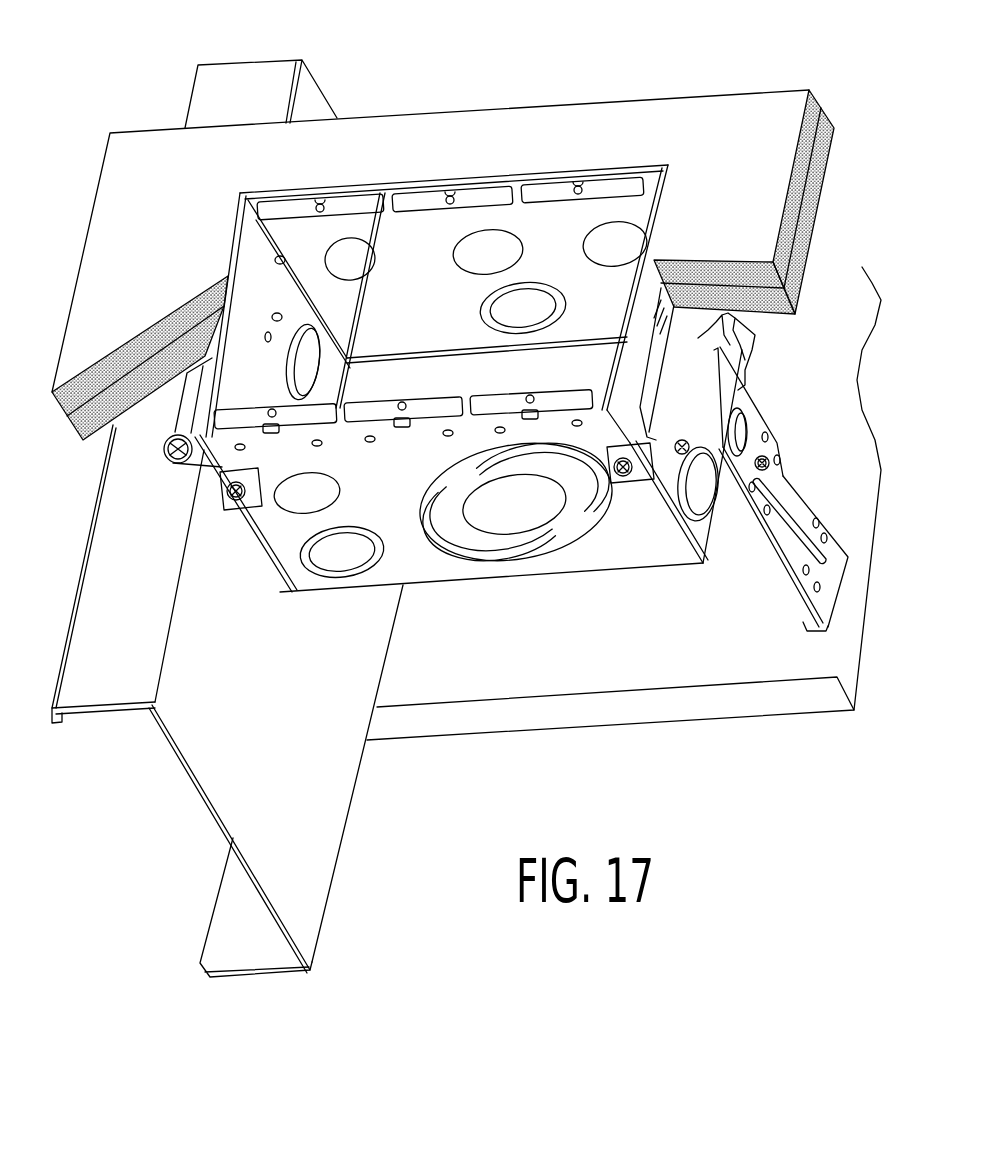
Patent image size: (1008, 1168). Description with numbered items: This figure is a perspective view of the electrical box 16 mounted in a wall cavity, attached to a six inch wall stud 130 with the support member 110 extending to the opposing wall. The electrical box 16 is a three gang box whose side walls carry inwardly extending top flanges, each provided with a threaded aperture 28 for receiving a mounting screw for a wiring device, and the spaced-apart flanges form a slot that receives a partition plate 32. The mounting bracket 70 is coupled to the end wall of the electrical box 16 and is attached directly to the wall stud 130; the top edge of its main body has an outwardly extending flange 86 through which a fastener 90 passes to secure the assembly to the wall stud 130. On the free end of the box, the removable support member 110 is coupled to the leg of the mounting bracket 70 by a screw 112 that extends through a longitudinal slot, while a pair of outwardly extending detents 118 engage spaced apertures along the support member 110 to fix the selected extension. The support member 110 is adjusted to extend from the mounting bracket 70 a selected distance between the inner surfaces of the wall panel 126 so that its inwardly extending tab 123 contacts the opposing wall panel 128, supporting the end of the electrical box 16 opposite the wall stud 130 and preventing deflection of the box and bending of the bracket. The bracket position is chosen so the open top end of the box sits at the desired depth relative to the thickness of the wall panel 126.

The electrical box 16 is at (474, 590).
The threaded aperture 28 is at (450, 197).
The partition plate 32 is at (352, 308).
The mounting bracket 70 is at (750, 398).
The outwardly extending flange 86 is at (182, 423).
The fastener 90 is at (166, 464).
The support member 110 is at (778, 556).
The screw 112 is at (771, 458).
The detents 118 is at (768, 436).
The inwardly extending tab 123 is at (797, 622).
The wall panel 126 is at (832, 126).
The opposing wall panel 128 is at (597, 728).
The wall stud 130 is at (297, 835).